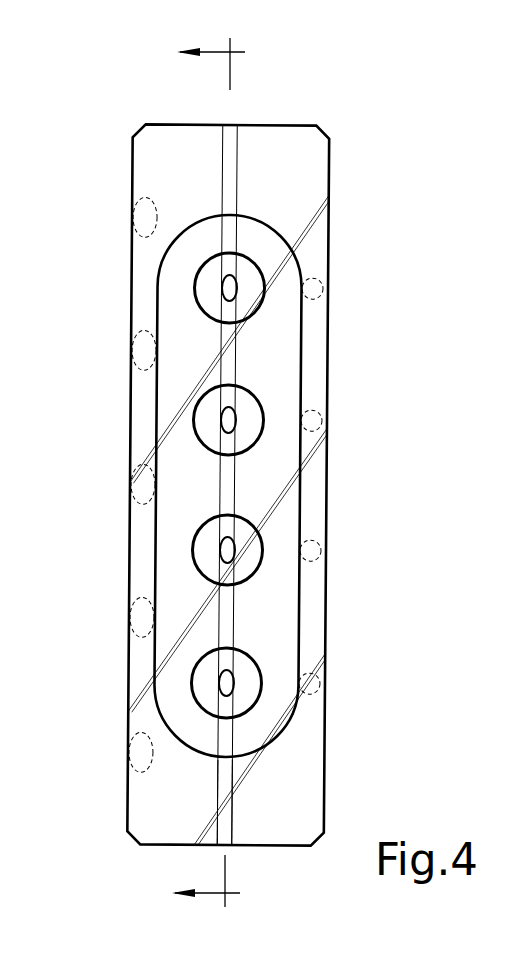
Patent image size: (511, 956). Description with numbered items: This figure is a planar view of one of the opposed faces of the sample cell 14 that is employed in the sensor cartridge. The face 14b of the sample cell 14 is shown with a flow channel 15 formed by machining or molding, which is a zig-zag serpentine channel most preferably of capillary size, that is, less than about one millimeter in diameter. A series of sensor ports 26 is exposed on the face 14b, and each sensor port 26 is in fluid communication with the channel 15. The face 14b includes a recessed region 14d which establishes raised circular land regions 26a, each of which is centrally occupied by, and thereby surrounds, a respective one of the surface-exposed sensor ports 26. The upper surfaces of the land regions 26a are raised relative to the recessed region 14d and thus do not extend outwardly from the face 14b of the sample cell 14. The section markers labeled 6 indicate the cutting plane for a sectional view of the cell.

The sample cell 14 is at (112, 748).
The face 14b is at (283, 807).
The recessed region 14d is at (273, 481).
The flow channel 15 is at (236, 163).
The sensor port 26 is at (233, 289).
The land region 26a is at (247, 273).
The section line 6- 6 is at (191, 474).